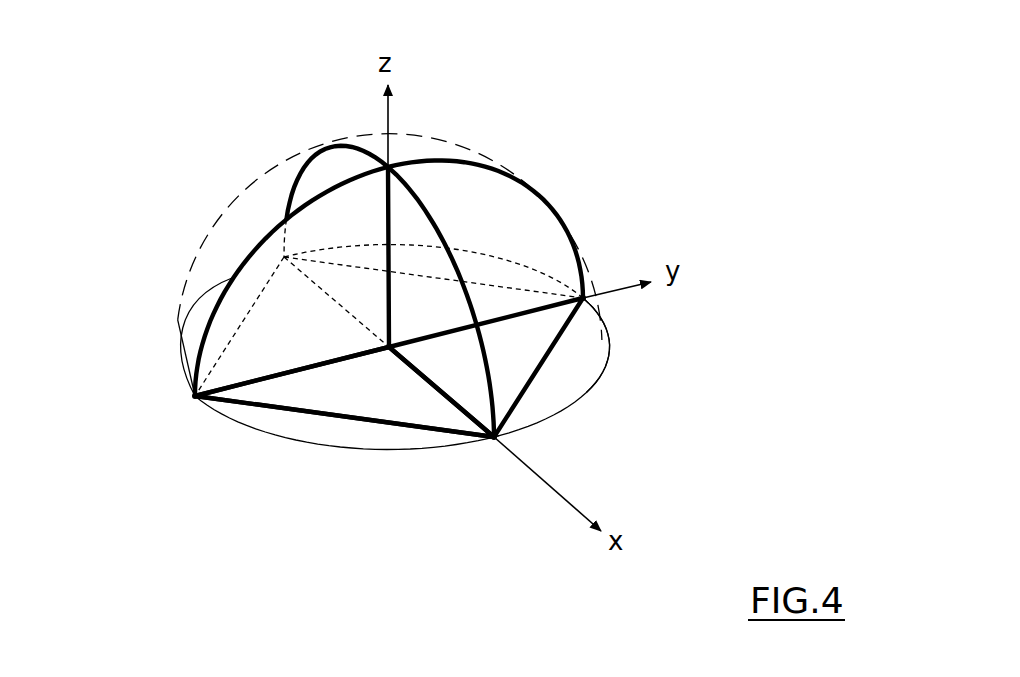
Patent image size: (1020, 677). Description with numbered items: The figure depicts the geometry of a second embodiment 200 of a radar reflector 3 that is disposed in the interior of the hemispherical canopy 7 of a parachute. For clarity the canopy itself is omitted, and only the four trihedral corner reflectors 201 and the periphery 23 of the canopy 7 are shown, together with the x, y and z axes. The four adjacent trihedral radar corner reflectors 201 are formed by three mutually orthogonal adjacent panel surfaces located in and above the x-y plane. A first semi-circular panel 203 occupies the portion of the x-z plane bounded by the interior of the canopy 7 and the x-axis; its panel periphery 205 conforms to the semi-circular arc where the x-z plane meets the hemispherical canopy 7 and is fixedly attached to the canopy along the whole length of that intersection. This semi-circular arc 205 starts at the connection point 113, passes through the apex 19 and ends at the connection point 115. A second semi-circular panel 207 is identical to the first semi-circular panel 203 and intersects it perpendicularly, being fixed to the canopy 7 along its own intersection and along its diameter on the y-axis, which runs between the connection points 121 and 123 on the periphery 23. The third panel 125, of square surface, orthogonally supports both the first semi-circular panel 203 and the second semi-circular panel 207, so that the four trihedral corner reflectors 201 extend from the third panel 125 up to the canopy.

The radar reflector 3 is at (657, 191).
The hemispherical canopy 7 is at (422, 140).
The apex 19 is at (385, 158).
The periphery 23 is at (590, 385).
The connection point 113 is at (284, 257).
The connection point 115 is at (493, 444).
The connection point 121 is at (593, 309).
The connection point 123 is at (196, 395).
The third square panel 125 is at (327, 393).
The second embodiment 200 is at (635, 94).
The trihedral corner reflectors 201 is at (210, 133).
The first semi-circular panel 203 is at (437, 407).
The panel periphery 205 is at (492, 389).
The second semi-circular panel 207 is at (233, 373).